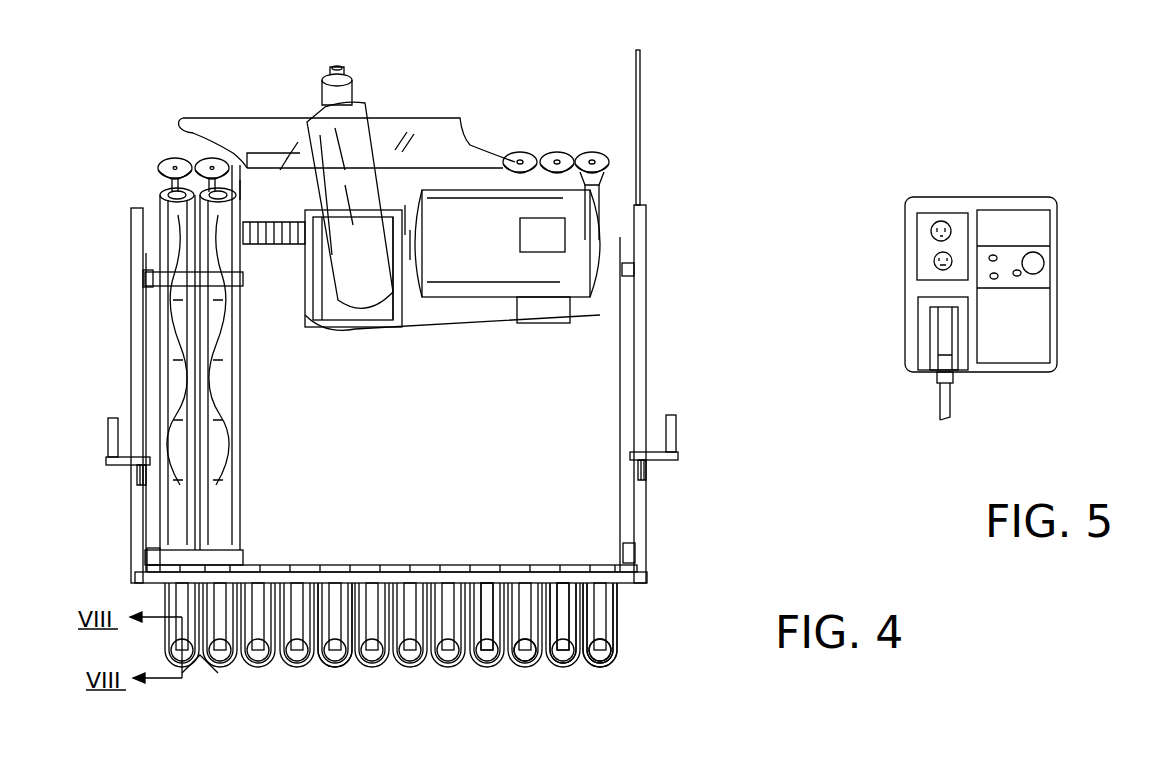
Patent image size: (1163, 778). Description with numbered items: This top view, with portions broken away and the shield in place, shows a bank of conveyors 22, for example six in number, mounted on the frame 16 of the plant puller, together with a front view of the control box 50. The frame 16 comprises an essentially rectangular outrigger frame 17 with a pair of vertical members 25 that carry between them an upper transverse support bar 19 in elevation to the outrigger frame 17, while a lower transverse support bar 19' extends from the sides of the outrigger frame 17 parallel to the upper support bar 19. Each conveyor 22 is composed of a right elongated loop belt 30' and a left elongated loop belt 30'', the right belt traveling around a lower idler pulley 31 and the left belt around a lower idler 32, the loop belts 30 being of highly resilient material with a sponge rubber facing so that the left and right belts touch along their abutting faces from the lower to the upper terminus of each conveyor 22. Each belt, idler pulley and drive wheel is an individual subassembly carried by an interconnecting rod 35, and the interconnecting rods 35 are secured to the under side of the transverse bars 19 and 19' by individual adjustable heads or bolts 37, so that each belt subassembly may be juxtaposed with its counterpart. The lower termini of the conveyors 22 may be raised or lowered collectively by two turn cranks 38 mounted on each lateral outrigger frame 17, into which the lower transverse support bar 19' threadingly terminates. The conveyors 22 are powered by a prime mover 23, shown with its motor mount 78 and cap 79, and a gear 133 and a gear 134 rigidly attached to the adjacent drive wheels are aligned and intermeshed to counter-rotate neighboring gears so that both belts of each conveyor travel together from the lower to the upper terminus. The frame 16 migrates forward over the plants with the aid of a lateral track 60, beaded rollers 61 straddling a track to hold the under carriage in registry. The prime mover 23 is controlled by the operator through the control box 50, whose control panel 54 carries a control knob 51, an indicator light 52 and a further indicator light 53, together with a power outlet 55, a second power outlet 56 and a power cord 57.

In FIG. 4, the frame 16 is at (128, 486).
In FIG. 4, the outrigger frame 17 is at (135, 577).
In FIG. 4, the upper transverse support bar 19 is at (375, 257).
In FIG. 4, the lower transverse support bar 19' is at (391, 528).
In FIG. 4, the conveyor 22 is at (279, 675).
In FIG. 4, the prime mover 23 is at (485, 256).
In FIG. 4, the vertical members 25 is at (138, 310).
In FIG. 4, the loop belts 30 is at (448, 656).
In FIG. 4, the right elongated loop belt 30' is at (669, 623).
In FIG. 4, the left elongated loop belt 30'' is at (603, 656).
In FIG. 4, the lower idler pulley 31 is at (525, 648).
In FIG. 4, the lower idler 32 is at (478, 648).
In FIG. 4, the interconnecting rod 35 is at (318, 670).
In FIG. 4, the adjustable heads or bolts 37 is at (246, 286).
In FIG. 4, the cranks 38 is at (110, 424).
In FIG. 5, the control box 50 is at (1058, 200).
In FIG. 5, the control knob 51 is at (1036, 263).
In FIG. 5, the indicator light 52 is at (1020, 277).
In FIG. 5, the indicator light 53 is at (1014, 298).
In FIG. 5, the control panel 54 is at (1025, 230).
In FIG. 5, the power outlet 55 is at (940, 221).
In FIG. 5, the power outlet 56 is at (934, 265).
In FIG. 5, the power cord 57 is at (950, 408).
In FIG. 4, the track 60 is at (178, 135).
In FIG. 4, the beaded rollers 61 is at (216, 122).
In FIG. 4, the motor mount 78 is at (575, 315).
In FIG. 4, the cap 79 is at (333, 80).
In FIG. 4, the gear 133 is at (512, 153).
In FIG. 4, the gear 134 is at (158, 168).